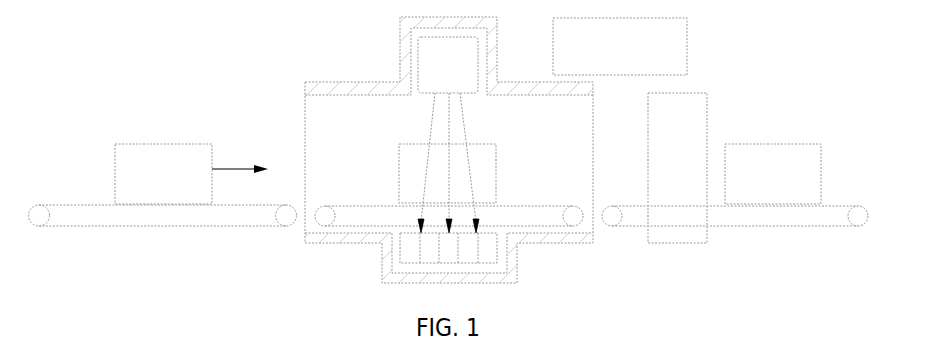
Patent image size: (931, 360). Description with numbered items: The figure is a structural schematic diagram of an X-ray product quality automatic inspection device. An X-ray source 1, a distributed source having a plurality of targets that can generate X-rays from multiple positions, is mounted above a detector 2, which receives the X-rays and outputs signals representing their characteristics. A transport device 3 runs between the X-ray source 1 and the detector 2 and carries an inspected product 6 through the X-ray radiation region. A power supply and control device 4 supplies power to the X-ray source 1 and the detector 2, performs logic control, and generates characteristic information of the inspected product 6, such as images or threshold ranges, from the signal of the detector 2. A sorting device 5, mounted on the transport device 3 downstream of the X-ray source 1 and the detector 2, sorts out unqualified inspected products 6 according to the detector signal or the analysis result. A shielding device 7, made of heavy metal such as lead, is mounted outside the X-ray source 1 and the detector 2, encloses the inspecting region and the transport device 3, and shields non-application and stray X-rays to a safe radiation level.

The X-ray source 1 is at (471, 89).
The detector 2 is at (492, 252).
The transport device 3 is at (183, 218).
The power supply and control device 4 is at (679, 45).
The sorting device 5 is at (699, 104).
The inspected product 6 is at (812, 160).
The shielding device 7 is at (586, 239).